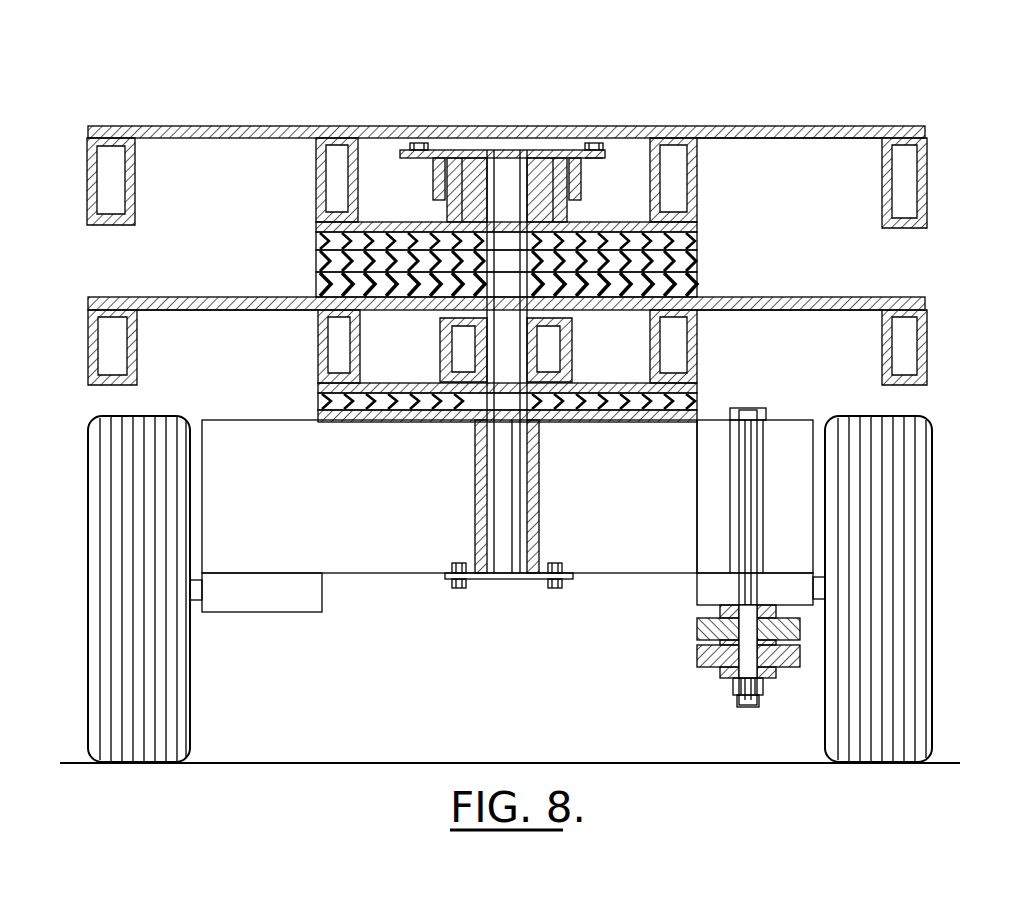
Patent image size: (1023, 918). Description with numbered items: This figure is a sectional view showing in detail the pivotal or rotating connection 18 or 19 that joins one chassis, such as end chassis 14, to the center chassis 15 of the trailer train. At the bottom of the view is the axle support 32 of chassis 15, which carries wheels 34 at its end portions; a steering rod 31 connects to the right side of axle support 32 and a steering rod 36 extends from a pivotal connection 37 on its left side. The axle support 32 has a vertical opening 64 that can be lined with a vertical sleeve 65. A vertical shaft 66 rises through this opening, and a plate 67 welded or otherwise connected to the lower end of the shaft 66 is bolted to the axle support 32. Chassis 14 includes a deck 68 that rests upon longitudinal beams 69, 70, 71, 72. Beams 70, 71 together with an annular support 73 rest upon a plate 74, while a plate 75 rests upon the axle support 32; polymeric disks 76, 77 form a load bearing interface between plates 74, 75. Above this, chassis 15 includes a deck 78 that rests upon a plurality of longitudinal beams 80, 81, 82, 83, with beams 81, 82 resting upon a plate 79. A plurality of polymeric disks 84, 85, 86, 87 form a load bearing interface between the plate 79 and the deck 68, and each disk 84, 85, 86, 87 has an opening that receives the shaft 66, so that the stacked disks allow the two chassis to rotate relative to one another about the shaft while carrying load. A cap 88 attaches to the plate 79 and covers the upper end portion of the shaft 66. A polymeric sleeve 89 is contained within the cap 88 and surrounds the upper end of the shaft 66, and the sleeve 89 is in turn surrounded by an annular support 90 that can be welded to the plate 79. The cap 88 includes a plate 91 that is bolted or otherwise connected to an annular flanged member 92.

The end chassis 14 is at (230, 297).
The center chassis 15 is at (220, 126).
The pivotal connection 18 is at (886, 68).
The pivotal connection 19 is at (838, 100).
The steering rod 31 is at (733, 668).
The axle support 32 is at (362, 516).
The wheels 34 is at (100, 708).
The steering rod 36 is at (697, 628).
The pivotal connection 37 is at (757, 410).
The vertical opening 64 is at (475, 468).
The vertical sleeve 65 is at (475, 515).
The vertical shaft 66 is at (505, 515).
The plate 67 is at (540, 585).
The deck 68 is at (222, 310).
The longitudinal beam 69 is at (137, 365).
The longitudinal beam 70 is at (318, 345).
The longitudinal beam 71 is at (697, 365).
The longitudinal beam 72 is at (927, 360).
The annular support 73 is at (440, 330).
The plate 74 is at (635, 382).
The plate 75 is at (318, 388).
The polymeric disk 76 is at (425, 393).
The polymeric disk 77 is at (400, 415).
The deck 78 is at (822, 138).
The plate 79 is at (316, 227).
The longitudinal beam 80 is at (87, 198).
The longitudinal beam 81 is at (316, 170).
The longitudinal beam 82 is at (697, 182).
The longitudinal beam 83 is at (927, 186).
The polymeric disk 84 is at (697, 238).
The polymeric disk 85 is at (697, 255).
The polymeric disk 86 is at (697, 280).
The polymeric disk 87 is at (506, 248).
The cap 88 is at (525, 150).
The polymeric sleeve 89 is at (470, 158).
The annular support 90 is at (435, 195).
The plate 91 is at (600, 150).
The annular flanged member 92 is at (405, 152).